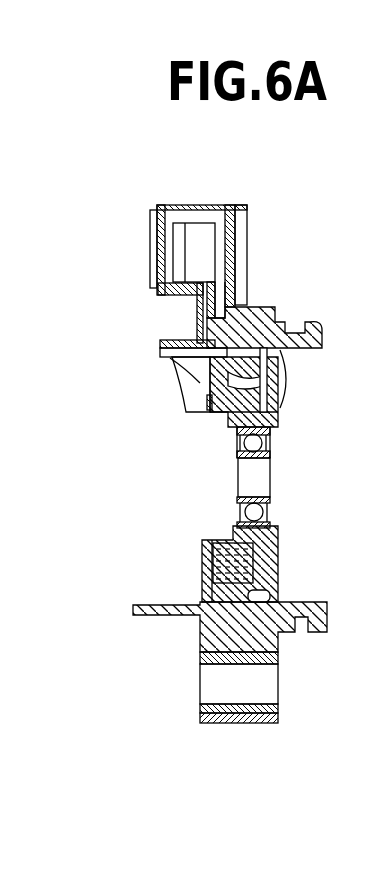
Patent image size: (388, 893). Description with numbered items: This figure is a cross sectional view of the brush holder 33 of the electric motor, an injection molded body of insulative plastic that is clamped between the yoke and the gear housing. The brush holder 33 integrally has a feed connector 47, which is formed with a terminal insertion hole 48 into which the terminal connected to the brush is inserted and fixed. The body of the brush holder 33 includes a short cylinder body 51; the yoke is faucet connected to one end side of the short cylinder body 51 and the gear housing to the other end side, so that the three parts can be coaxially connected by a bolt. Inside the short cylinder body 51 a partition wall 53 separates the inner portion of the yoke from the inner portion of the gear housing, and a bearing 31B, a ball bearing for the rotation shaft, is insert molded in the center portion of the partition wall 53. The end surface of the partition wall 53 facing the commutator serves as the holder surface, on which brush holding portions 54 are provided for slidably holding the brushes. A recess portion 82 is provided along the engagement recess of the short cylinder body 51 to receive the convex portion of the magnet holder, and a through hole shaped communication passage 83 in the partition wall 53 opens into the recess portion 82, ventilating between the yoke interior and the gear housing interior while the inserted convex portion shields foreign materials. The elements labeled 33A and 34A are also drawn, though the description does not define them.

The brush holder 33 is at (282, 235).
The feed connector 47 is at (236, 212).
The terminal insertion hole 48 is at (197, 311).
The short cylinder body 51 is at (273, 316).
The recess portion 82 is at (182, 364).
The communication passage 83 is at (272, 371).
The partition wall 53 is at (273, 409).
The bearing 31B is at (263, 440).
The brush holding portion 54 is at (202, 548).
The shaft end member 33A is at (262, 765).
The cylindrical sleeve 34A is at (268, 690).